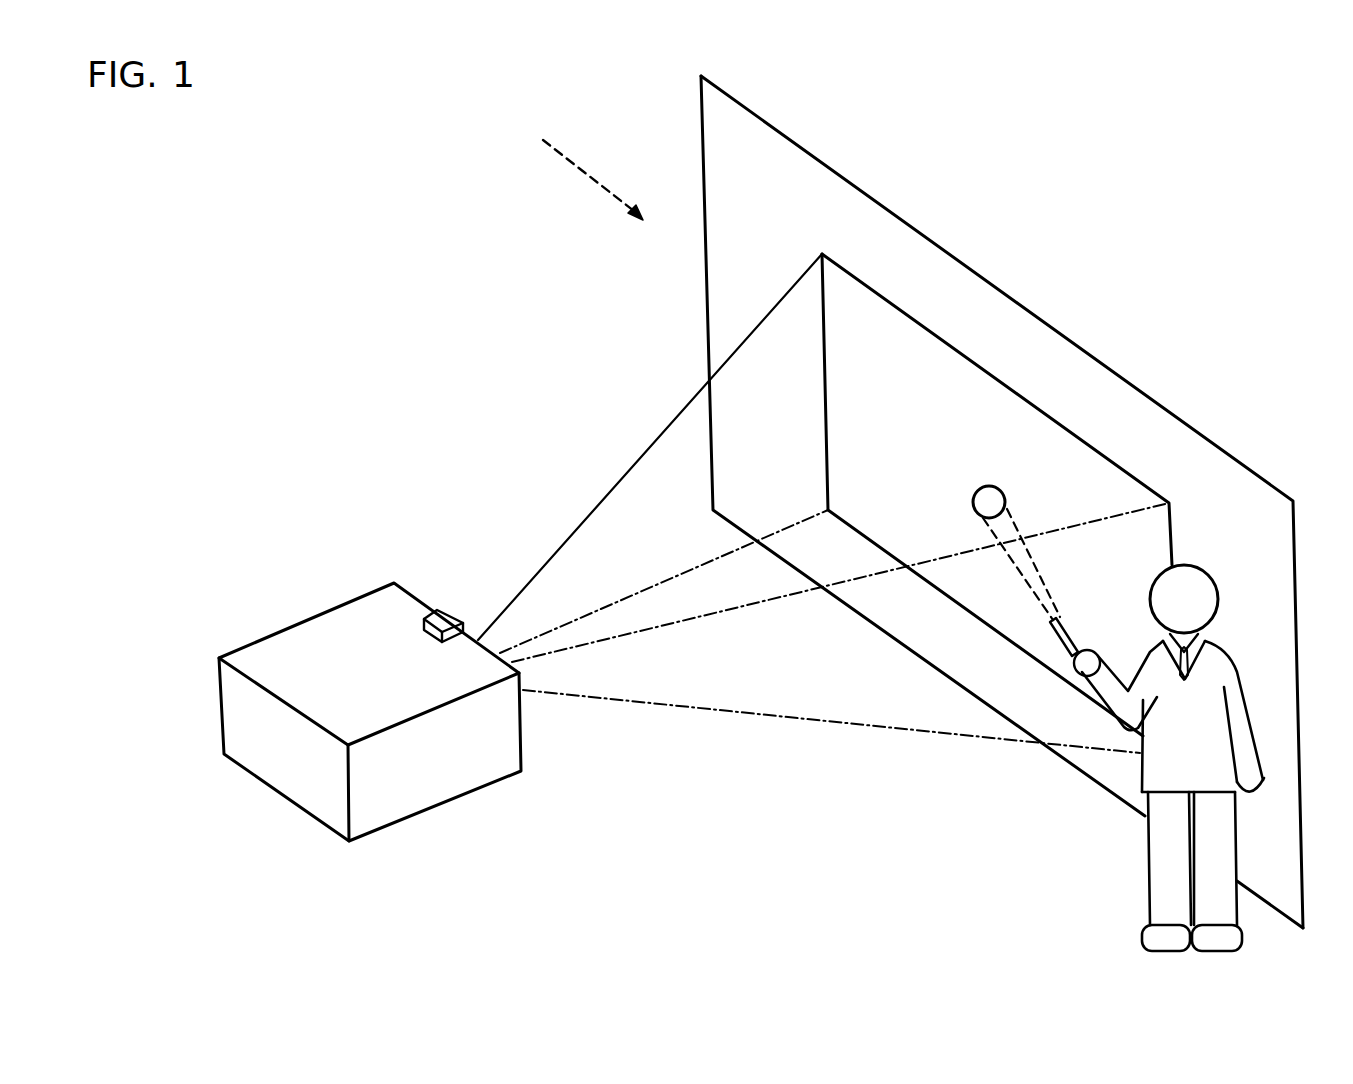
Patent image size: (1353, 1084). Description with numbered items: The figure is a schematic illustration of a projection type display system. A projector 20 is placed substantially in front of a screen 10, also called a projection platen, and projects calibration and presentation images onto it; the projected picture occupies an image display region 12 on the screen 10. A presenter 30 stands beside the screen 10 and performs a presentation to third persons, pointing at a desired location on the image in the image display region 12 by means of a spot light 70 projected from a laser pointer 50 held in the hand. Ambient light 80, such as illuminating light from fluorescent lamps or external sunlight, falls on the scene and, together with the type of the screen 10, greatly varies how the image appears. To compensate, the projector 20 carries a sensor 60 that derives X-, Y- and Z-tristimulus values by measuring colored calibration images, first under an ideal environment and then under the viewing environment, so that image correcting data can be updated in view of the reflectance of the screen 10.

The screen 10 is at (1033, 318).
The image display region 12 is at (1035, 408).
The projector 20 is at (498, 757).
The presenter 30 is at (1192, 565).
The laser pointer 50 is at (1075, 646).
The sensor 60 is at (446, 612).
The spot light 70 is at (1001, 493).
The ambient light 80 is at (567, 155).